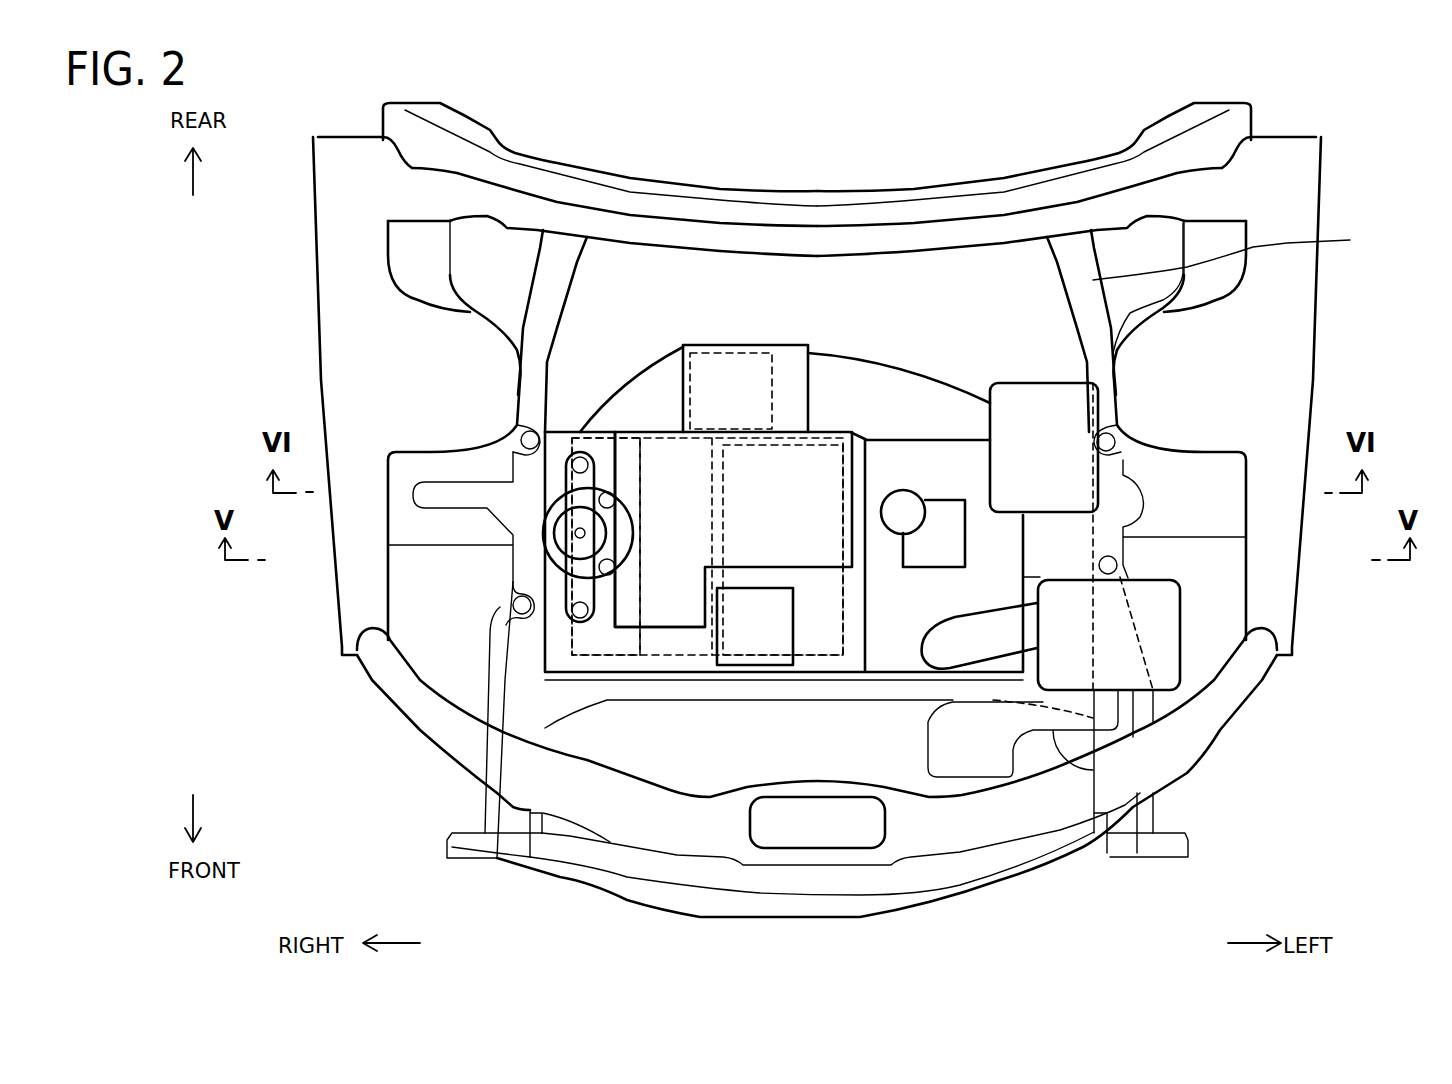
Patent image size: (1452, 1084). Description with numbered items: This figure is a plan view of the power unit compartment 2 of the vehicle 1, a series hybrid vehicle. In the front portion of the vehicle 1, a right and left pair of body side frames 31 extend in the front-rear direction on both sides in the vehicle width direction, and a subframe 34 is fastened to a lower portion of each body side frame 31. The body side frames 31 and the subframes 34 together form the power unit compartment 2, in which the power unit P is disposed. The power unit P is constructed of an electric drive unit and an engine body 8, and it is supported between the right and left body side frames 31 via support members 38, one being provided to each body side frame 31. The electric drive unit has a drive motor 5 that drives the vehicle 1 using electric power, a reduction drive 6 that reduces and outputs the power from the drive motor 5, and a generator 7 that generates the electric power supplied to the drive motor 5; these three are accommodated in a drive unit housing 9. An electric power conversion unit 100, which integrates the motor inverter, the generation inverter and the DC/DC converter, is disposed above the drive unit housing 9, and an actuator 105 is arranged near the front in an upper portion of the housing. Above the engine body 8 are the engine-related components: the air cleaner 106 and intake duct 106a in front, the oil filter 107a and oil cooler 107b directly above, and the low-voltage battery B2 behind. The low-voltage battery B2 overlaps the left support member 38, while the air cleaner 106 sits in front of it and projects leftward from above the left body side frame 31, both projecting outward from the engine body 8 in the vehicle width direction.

The vehicle 1 is at (1395, 178).
The power unit compartment 2 is at (891, 364).
The drive motor 5 is at (607, 657).
The reduction drive 6 is at (655, 657).
The generator 7 is at (817, 657).
The engine body 8 is at (897, 670).
The drive unit housing 9 is at (700, 670).
The body side frame 31 is at (540, 274).
The subframe 34 is at (857, 703).
The support member 38 is at (527, 543).
The electric power conversion unit 100 is at (677, 630).
The actuator 105 is at (760, 663).
The air cleaner 106 is at (1183, 610).
The intake duct 106a is at (1053, 740).
The oil filter 107a is at (902, 488).
The oil cooler 107b is at (942, 500).
The low-voltage battery B2 is at (1100, 400).
The power unit P is at (835, 412).